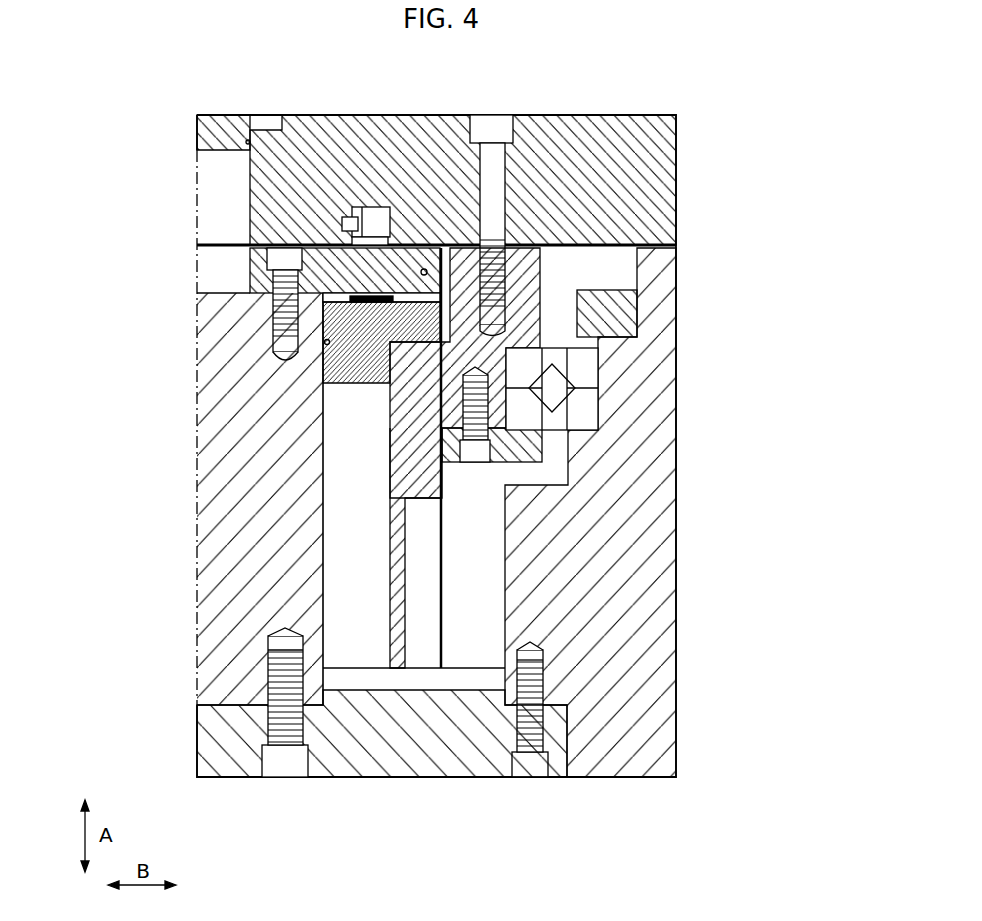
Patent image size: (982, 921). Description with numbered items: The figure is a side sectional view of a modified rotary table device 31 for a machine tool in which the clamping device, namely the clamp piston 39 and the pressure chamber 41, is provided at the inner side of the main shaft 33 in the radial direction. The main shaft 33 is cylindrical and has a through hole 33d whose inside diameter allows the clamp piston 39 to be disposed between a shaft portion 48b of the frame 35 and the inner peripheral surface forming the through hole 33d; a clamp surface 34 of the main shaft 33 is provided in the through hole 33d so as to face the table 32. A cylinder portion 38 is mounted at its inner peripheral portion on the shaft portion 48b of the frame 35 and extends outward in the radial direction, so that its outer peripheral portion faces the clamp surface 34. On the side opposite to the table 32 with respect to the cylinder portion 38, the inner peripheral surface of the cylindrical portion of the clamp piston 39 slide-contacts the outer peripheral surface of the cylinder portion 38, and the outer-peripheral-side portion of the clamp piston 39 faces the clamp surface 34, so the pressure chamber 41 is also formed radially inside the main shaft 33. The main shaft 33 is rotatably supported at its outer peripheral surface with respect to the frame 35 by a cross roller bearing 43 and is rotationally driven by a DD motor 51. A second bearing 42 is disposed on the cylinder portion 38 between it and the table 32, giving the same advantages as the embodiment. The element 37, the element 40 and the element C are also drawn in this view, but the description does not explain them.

The rotary table device 31 is at (585, 59).
The table 32 is at (668, 208).
The main shaft 33 is at (540, 278).
The through hole 33d is at (393, 480).
The clamp surface 34 is at (413, 322).
The frame 35 is at (108, 303).
The guide member 37 is at (577, 337).
The cylinder portion 38 is at (252, 272).
The clamp piston 39 is at (323, 372).
The piezoelectric element 40 is at (377, 292).
The pressure chamber 41 is at (252, 200).
The second bearing 42 is at (378, 207).
The cross roller bearing 43 is at (462, 395).
The shaft portion 48b is at (220, 330).
The DD motor 51 is at (427, 633).
The bottom plate C is at (197, 740).